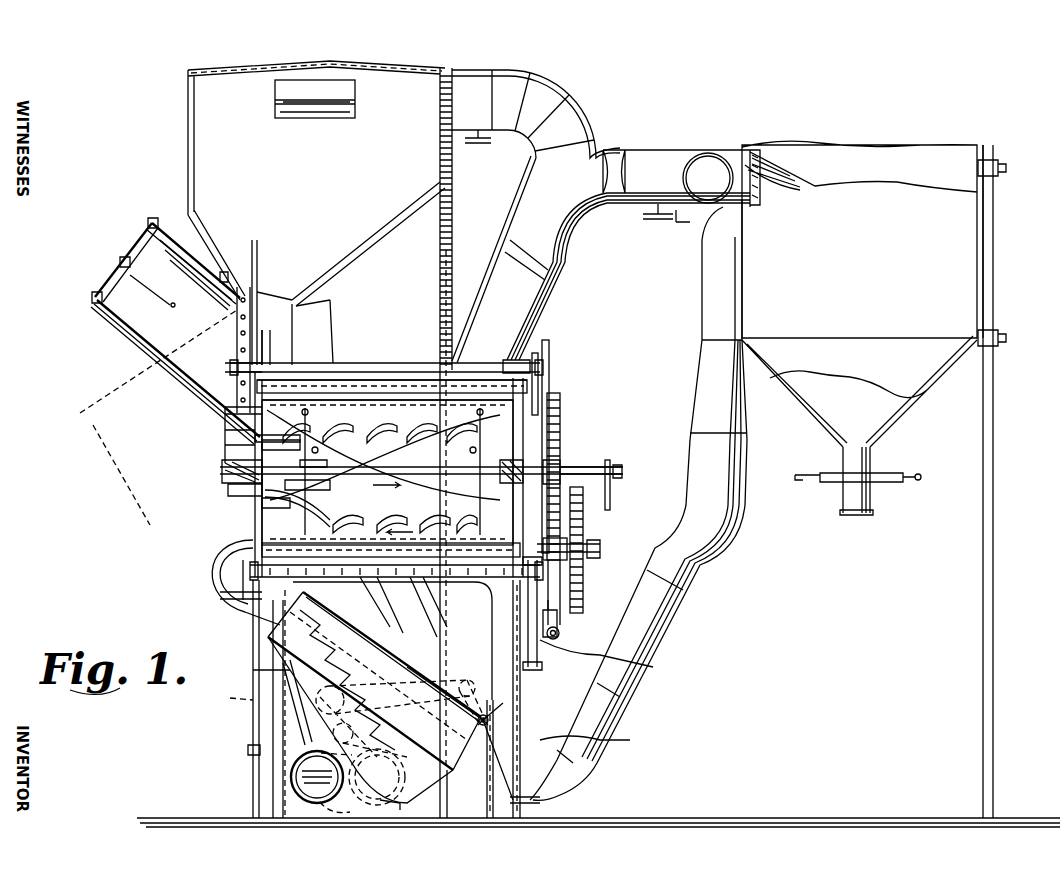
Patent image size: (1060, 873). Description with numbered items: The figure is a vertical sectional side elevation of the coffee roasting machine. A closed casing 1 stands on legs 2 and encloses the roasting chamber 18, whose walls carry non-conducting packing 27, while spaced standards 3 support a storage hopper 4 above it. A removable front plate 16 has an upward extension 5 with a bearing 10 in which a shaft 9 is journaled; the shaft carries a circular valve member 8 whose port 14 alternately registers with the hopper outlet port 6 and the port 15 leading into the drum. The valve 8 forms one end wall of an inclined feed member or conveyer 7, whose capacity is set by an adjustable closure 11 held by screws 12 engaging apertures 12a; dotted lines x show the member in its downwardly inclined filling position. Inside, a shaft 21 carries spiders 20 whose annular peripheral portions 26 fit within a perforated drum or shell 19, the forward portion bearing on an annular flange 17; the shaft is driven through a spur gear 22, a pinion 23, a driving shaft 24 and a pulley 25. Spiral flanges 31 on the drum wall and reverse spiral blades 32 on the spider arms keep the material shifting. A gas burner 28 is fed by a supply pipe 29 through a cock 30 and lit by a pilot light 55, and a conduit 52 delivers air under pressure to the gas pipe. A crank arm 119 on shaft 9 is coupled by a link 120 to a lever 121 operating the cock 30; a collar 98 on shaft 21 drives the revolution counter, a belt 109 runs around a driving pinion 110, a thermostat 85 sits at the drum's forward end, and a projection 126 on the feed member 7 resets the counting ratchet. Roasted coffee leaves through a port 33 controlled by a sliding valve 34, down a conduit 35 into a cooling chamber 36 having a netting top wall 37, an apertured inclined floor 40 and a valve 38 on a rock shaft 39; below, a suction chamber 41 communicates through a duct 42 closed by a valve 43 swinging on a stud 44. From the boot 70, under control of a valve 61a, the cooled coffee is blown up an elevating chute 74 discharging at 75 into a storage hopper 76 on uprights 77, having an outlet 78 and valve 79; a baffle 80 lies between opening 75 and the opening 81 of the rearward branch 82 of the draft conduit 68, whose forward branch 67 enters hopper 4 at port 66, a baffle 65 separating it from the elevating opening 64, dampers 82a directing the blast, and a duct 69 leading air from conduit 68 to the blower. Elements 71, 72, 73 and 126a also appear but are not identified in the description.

The closed casing 1 is at (353, 364).
The legs 2 is at (253, 727).
The standards 3 is at (440, 218).
The storage chamber or hopper 4 is at (255, 222).
The upward extension 5 is at (262, 330).
The port 6 is at (278, 292).
The feed member or conveyer 7 is at (157, 299).
The valve member 8 is at (238, 338).
The shaft 9 is at (232, 366).
The bearing 10 is at (270, 358).
The adjustable closure 11 is at (123, 257).
The screws 12 is at (160, 222).
The apertures 12a is at (147, 285).
The port 14 is at (225, 413).
The port 15 is at (226, 458).
The removable front plate 16 is at (232, 470).
The annular flange or shoulder 17 is at (240, 400).
The roasting chamber 18 is at (421, 471).
The drum or shell 19 is at (360, 395).
The spiders 20 is at (380, 438).
The shaft 21 is at (228, 490).
The spur gear 22 is at (562, 408).
The pinion 23 is at (565, 556).
The driving shaft 24 is at (603, 550).
The pulley 25 is at (585, 525).
The annular peripheral portion 26 is at (333, 300).
The non-conducting packing 27 is at (330, 380).
The gas burner 28 is at (352, 572).
The supply pipe 29 is at (560, 590).
The valve or cock 30 is at (524, 604).
The spiral flanges or projections 31 is at (382, 418).
The spiral blades 32 is at (315, 487).
The discharge aperture or port 33 is at (297, 508).
The valve 34 is at (240, 540).
The conduit or passage 35 is at (250, 602).
The cooling chamber 36 is at (374, 697).
The apertured cover or top wall 37 is at (407, 672).
The adjustable closure or valve 38 is at (481, 727).
The rock shaft 39 is at (503, 703).
The floor or bottom 40 is at (393, 724).
The suction chamber 41 is at (253, 670).
The duct 42 is at (400, 805).
The valve 43 is at (363, 745).
The stud or shaft 44 is at (253, 750).
The conduit 52 is at (612, 660).
The pilot light 55 is at (392, 572).
The adjustable valve 61a is at (600, 738).
The opening 64 is at (304, 115).
The deflecting or baffle plate 65 is at (290, 103).
The port 66 is at (315, 99).
The branch 67 is at (530, 100).
The exhaust passage or conduit 68 is at (497, 262).
The passage or duct 69 is at (315, 788).
The boot or pocket 70 is at (512, 800).
The frame member 71 is at (224, 695).
The sprocket 72 is at (478, 690).
The sprocket 73 is at (403, 688).
The elevating chute or passage 74 is at (663, 613).
The discharge opening 75 is at (745, 215).
The storage hopper or chamber 76 is at (862, 239).
The uprights 77 is at (990, 417).
The discharge outlet 78 is at (845, 514).
The valve 79 is at (920, 479).
The deflector or baffle plate 80 is at (775, 187).
The opening 81 is at (754, 152).
The rearwardly directed branch 82 is at (655, 210).
The valves or dampers 82a is at (680, 252).
The thermostat 85 is at (262, 480).
The collar 98 is at (262, 502).
The belt or band 109 is at (612, 490).
The driving pinion 110 is at (600, 468).
The crank arm 119 is at (547, 337).
The link 120 is at (550, 370).
The lever 121 is at (560, 618).
The actuating member or projection 126 is at (250, 438).
The bracket 126a is at (224, 277).
The dotted-line position x is at (145, 417).